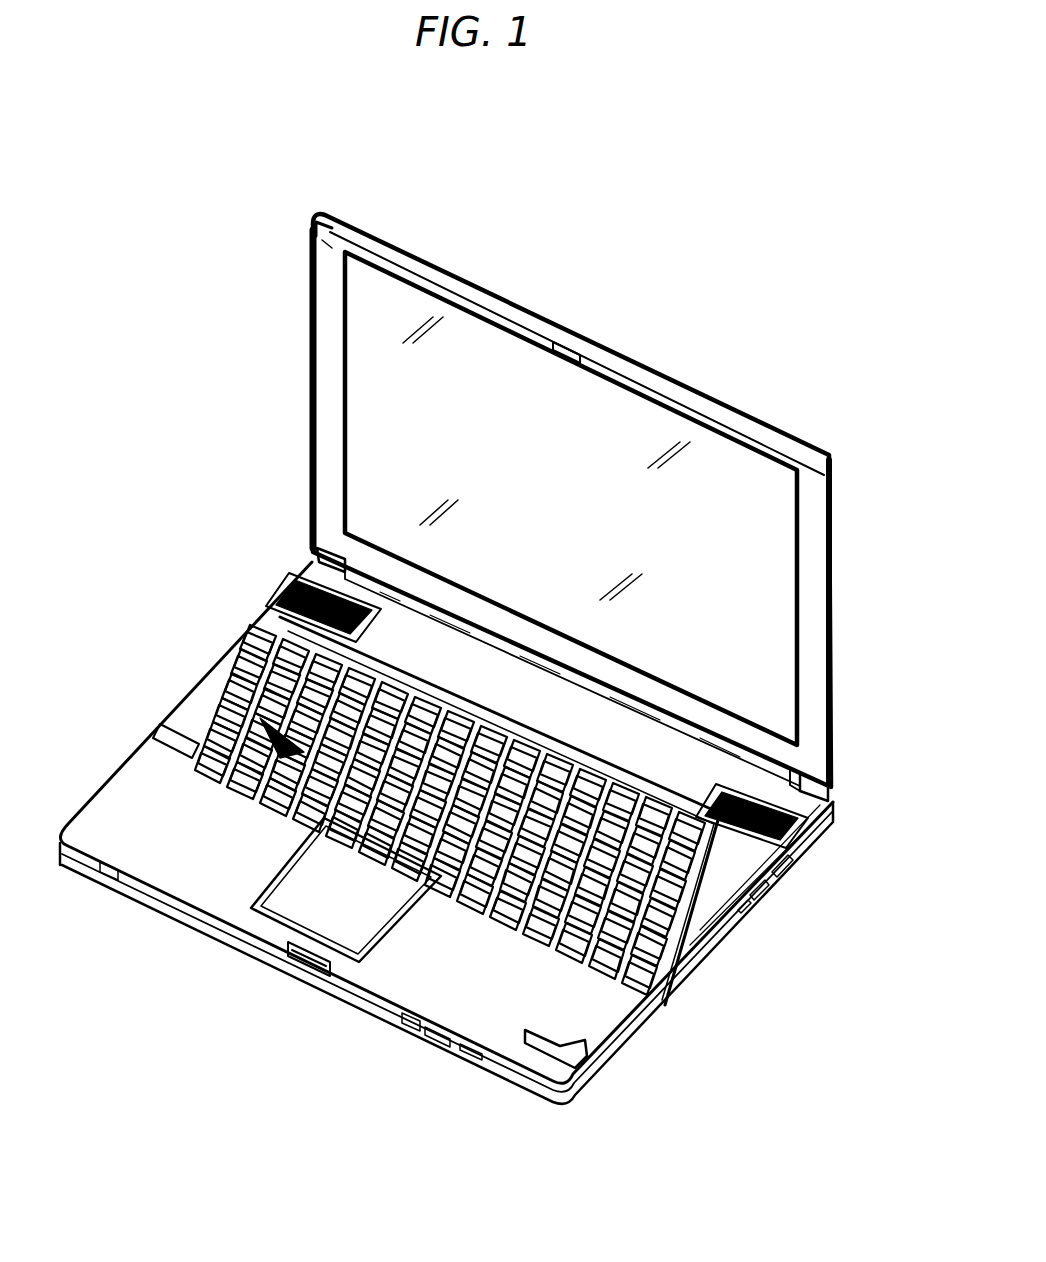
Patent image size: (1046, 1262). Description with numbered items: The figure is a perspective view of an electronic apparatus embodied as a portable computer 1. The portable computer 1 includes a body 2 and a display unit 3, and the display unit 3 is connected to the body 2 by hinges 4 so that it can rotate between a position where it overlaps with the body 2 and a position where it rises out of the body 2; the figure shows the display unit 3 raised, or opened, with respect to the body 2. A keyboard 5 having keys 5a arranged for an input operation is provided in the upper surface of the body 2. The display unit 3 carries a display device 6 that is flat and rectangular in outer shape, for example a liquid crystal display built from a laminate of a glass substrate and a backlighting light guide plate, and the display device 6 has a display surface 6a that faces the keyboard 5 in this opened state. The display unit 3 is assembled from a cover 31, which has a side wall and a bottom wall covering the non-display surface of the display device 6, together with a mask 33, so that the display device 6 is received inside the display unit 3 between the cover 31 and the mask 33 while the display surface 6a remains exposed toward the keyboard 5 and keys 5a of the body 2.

The portable computer 1 is at (545, 303).
The body 2 is at (102, 782).
The display unit 3 is at (657, 377).
The cover 31 is at (432, 270).
The mask 33 is at (316, 218).
The hinges 4 is at (345, 560).
The keyboard 5 is at (187, 693).
The keys 5a is at (290, 662).
The display device 6 is at (615, 390).
The display surface 6a is at (725, 470).